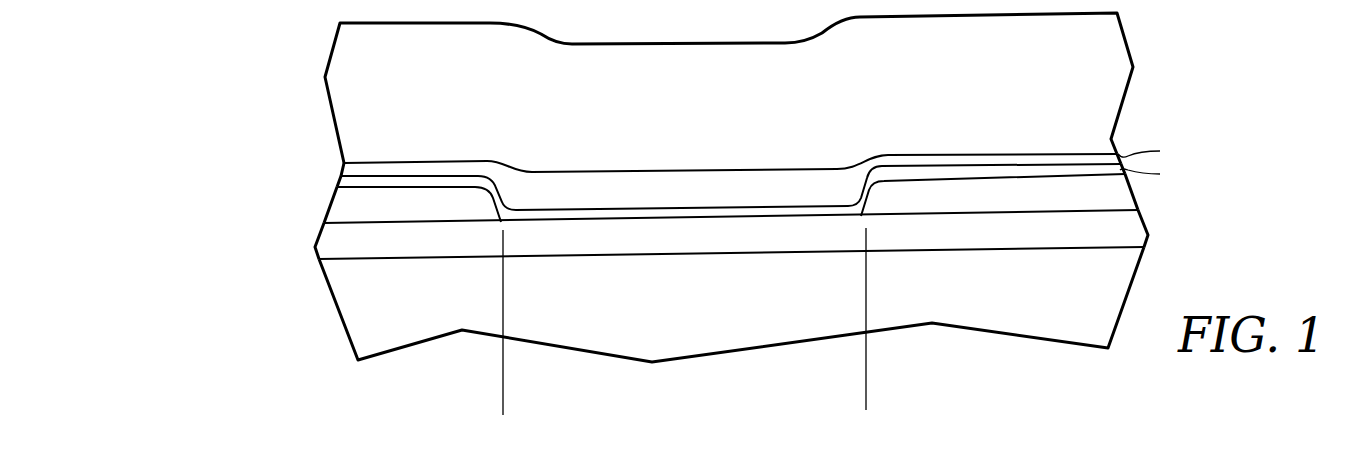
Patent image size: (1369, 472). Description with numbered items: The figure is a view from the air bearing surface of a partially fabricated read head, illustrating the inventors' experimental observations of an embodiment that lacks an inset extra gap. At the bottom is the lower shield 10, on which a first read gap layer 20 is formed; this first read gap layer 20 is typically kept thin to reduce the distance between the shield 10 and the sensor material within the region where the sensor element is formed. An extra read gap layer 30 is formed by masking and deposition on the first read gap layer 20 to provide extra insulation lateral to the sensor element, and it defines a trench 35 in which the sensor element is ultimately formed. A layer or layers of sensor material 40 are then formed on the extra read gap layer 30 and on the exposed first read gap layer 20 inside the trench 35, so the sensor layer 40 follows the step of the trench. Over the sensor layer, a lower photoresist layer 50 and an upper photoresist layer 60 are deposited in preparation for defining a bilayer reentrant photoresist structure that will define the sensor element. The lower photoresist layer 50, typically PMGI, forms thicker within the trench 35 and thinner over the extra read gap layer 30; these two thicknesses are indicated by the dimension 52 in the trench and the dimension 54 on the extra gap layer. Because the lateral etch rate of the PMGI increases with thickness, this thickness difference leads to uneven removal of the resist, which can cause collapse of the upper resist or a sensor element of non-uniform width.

The lower shield 10 is at (349, 286).
The first read gap layer 20 is at (348, 231).
The extra read gap layer 30 is at (348, 196).
The sensor layer 40 is at (358, 177).
The lower photoresist layer 50 is at (345, 161).
The upper photoresist layer 60 is at (371, 84).
The thickness of photoresist layer in trench 52 is at (742, 278).
The thickness of photoresist layer on extra gap layer 54 is at (415, 250).
The trench 35 is at (866, 400).